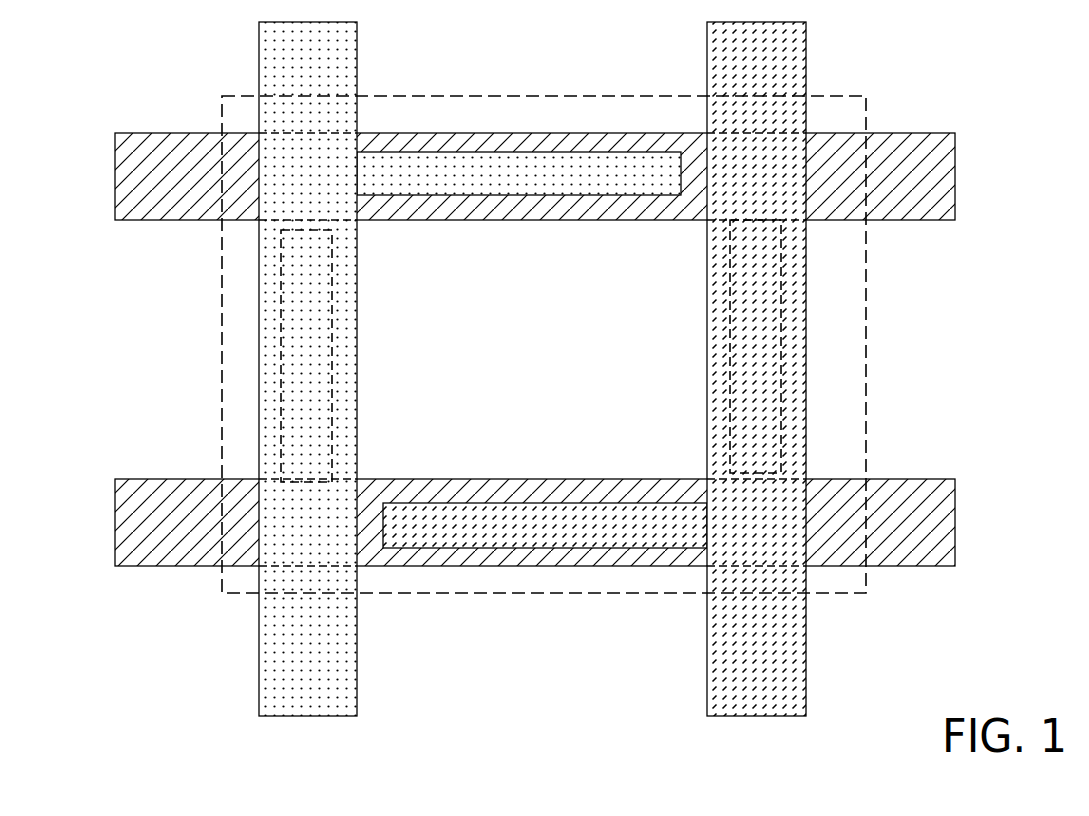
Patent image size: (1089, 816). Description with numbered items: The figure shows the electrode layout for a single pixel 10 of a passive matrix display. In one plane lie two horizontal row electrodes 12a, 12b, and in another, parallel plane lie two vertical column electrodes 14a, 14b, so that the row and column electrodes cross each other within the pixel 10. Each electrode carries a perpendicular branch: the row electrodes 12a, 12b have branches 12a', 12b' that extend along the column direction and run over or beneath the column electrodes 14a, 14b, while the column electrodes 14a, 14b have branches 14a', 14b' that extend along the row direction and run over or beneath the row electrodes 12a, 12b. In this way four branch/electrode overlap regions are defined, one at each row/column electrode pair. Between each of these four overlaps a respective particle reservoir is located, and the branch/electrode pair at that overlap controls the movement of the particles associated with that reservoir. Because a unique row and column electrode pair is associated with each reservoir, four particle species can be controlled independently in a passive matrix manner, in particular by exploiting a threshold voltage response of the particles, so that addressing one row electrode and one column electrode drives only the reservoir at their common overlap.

The pixel 10 is at (545, 96).
The row electrode 12a is at (535, 210).
The row electrode 12b is at (535, 493).
The perpendicular branch of row electrode 12a' is at (715, 346).
The perpendicular branch of row electrode 12b' is at (352, 356).
The column electrode 14a is at (795, 369).
The column electrode 14b is at (348, 369).
The perpendicular branch of column electrode 14a' is at (545, 493).
The perpendicular branch of column electrode 14b' is at (519, 208).